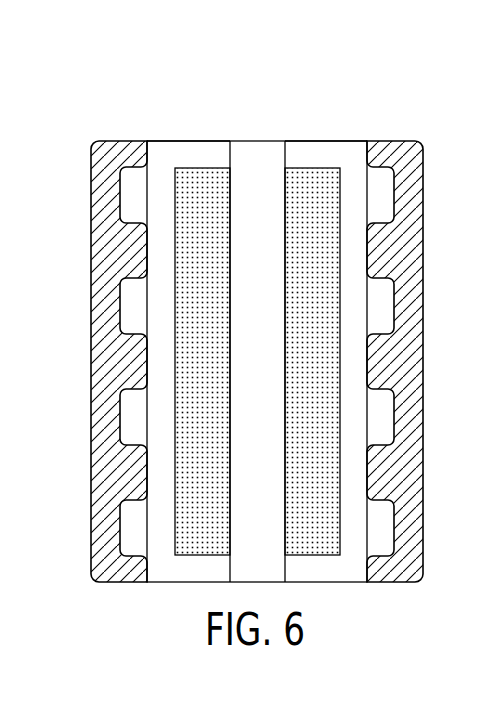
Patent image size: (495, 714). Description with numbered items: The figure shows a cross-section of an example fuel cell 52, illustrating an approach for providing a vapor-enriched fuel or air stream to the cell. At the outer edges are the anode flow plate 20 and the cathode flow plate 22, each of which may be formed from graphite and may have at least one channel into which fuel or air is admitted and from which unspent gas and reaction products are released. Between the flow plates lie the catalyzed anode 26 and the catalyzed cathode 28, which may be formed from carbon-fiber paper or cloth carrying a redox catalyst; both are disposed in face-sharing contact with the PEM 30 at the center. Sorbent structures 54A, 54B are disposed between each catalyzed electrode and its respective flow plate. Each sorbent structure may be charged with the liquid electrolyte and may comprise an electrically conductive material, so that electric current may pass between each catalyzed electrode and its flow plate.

The fuel cell 52 is at (258, 100).
The anode flow plate 20 is at (125, 260).
The cathode flow plate 22 is at (407, 260).
The catalyzed anode 26 is at (212, 373).
The catalyzed cathode 28 is at (322, 373).
The PEM 30 is at (267, 373).
The sorbent structure 54A is at (188, 166).
The sorbent structure 54B is at (356, 166).